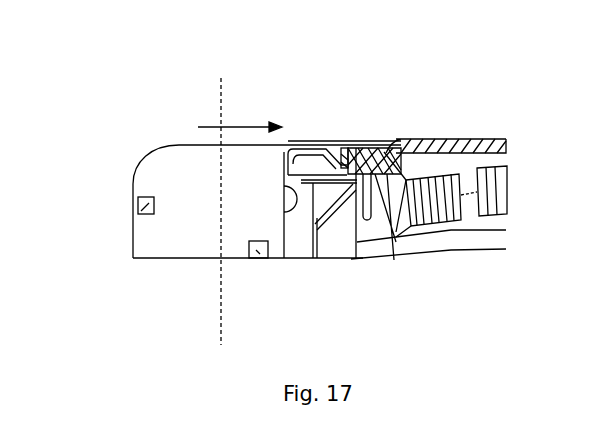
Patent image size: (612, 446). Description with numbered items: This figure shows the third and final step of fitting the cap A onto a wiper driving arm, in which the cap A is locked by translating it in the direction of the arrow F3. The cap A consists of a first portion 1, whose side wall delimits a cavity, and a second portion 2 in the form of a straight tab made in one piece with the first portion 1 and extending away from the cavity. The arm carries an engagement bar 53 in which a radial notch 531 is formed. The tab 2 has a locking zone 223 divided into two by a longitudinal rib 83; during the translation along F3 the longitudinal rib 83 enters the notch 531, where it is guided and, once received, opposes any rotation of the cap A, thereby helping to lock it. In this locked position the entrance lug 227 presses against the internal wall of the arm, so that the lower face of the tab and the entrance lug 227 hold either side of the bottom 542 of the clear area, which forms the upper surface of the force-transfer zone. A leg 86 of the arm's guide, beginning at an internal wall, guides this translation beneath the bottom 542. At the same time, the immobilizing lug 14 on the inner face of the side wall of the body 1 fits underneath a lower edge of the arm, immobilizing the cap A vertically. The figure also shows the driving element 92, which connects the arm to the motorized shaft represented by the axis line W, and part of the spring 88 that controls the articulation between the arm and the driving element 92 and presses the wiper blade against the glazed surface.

The first portion 1 is at (183, 232).
The second portion 2 is at (326, 143).
The immobilizing lug 14 is at (134, 210).
The engagement bar 53 is at (367, 145).
The notch 531 is at (352, 143).
The longitudinal rib 83 is at (360, 258).
The leg 86 is at (424, 225).
The spring 88 is at (450, 228).
The driving element 92 is at (296, 258).
The locking zone 223 is at (396, 137).
The entrance lug 227 is at (392, 235).
The bottom 542 is at (441, 137).
The cap A is at (177, 131).
The motorized shaft axis W is at (218, 311).
The translation arrow F3 is at (240, 117).